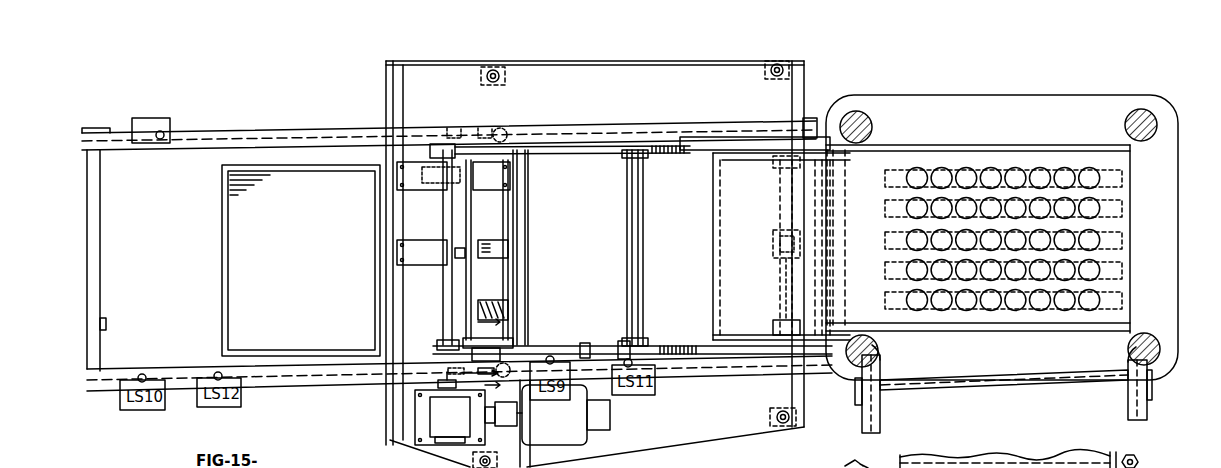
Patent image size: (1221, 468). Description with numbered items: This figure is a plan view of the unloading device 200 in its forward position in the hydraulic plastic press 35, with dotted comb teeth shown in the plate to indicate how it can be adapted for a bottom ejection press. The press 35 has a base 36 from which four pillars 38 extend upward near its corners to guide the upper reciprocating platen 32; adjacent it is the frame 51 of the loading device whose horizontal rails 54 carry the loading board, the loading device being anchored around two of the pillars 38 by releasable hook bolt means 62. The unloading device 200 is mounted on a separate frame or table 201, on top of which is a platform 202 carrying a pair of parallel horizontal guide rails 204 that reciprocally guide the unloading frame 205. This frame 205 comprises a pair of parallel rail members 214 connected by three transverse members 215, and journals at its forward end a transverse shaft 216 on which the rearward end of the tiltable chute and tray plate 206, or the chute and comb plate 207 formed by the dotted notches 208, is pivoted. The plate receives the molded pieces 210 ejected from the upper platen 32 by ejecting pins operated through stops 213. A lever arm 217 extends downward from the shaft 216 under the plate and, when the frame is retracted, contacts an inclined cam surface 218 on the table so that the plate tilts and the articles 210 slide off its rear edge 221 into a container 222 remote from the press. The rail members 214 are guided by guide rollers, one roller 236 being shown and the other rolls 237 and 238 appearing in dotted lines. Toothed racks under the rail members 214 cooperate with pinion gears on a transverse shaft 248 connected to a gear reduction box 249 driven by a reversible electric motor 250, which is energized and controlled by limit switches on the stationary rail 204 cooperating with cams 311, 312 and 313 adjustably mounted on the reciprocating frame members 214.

The unloading device 200 is at (813, 84).
The frame or table 201 is at (726, 446).
The platform 202 is at (727, 416).
The guide rails 204 is at (255, 132).
The unloading frame 205 is at (588, 157).
The tiltable chute and tray plate 206 is at (1112, 174).
The chute and comb plate 207 is at (1128, 188).
The notches 208 is at (888, 186).
The molded pieces or objects 210 is at (1037, 170).
The stops 213 is at (1138, 444).
The parallel rail members 214 is at (700, 166).
The transverse members 215 is at (472, 202).
The transverse shaft 216 is at (782, 268).
The lever arm 217 is at (773, 240).
The inclined cam surface 218 is at (498, 231).
The rear edge 221 is at (718, 208).
The container 222 is at (222, 288).
The guide roller 236 is at (500, 126).
The guide roll 237 is at (450, 126).
The guide roll 238 is at (476, 126).
The transverse shaft 248 is at (444, 280).
The gear reduction box 249 is at (468, 408).
The reversible electric motor 250 is at (566, 415).
The limit switch operating cam 311 is at (622, 340).
The limit switch operating cam 312 is at (585, 342).
The limit switch operating cam 313 is at (479, 361).
The upper reciprocating platen 32 is at (993, 458).
The hydraulic plastic press 35 is at (1184, 220).
The base 36 is at (1162, 253).
The pillars 38 is at (866, 113).
The frame 51 is at (1020, 364).
The horizontal rails or tracks 54 is at (880, 415).
The releasable hook bolt means 62 is at (880, 348).